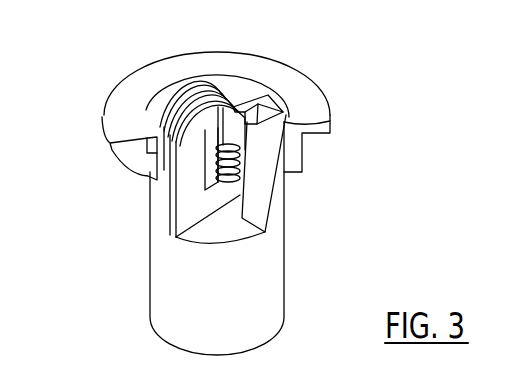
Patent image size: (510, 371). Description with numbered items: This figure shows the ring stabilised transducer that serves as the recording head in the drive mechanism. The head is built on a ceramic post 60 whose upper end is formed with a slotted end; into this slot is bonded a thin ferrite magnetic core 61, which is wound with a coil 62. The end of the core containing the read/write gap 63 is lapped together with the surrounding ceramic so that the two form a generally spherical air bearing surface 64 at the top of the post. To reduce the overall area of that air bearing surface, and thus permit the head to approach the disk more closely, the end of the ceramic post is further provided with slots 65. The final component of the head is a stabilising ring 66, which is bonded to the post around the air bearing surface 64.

The ceramic post 60 is at (278, 288).
The ferrite magnetic core 61 is at (194, 200).
The coil 62 is at (220, 183).
The read/write gap 63 is at (238, 88).
The air bearing surface 64 is at (182, 92).
The slots 65 is at (168, 126).
The stabilising ring 66 is at (331, 128).